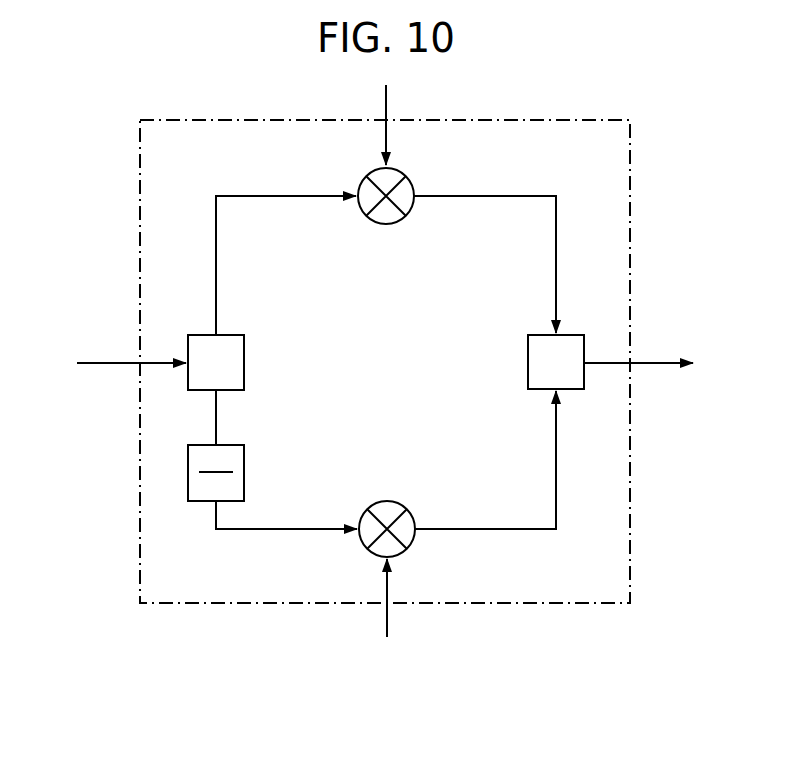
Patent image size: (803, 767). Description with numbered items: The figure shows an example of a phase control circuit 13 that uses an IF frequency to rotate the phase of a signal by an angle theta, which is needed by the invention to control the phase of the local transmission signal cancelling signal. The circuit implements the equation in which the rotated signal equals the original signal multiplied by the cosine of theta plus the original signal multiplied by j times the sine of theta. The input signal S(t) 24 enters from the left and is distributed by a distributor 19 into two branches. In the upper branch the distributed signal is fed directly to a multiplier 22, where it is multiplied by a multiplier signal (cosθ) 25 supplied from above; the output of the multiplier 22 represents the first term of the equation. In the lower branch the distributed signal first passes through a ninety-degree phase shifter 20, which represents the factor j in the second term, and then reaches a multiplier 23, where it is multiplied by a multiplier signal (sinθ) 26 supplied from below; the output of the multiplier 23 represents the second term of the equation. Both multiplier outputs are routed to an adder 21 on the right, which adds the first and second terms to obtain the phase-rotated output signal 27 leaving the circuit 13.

The phase control circuit 13 is at (533, 120).
The distributor 19 is at (244, 362).
The 90° phase shifter 20 is at (244, 473).
The adder 21 is at (528, 362).
The multiplier 22 is at (385, 226).
The multiplier 23 is at (387, 501).
The input signal S(t) 24 is at (88, 363).
The multiplier signal (cosθ) 25 is at (386, 135).
The multiplier signal (sinθ) 26 is at (387, 613).
The output signal 27 is at (645, 363).